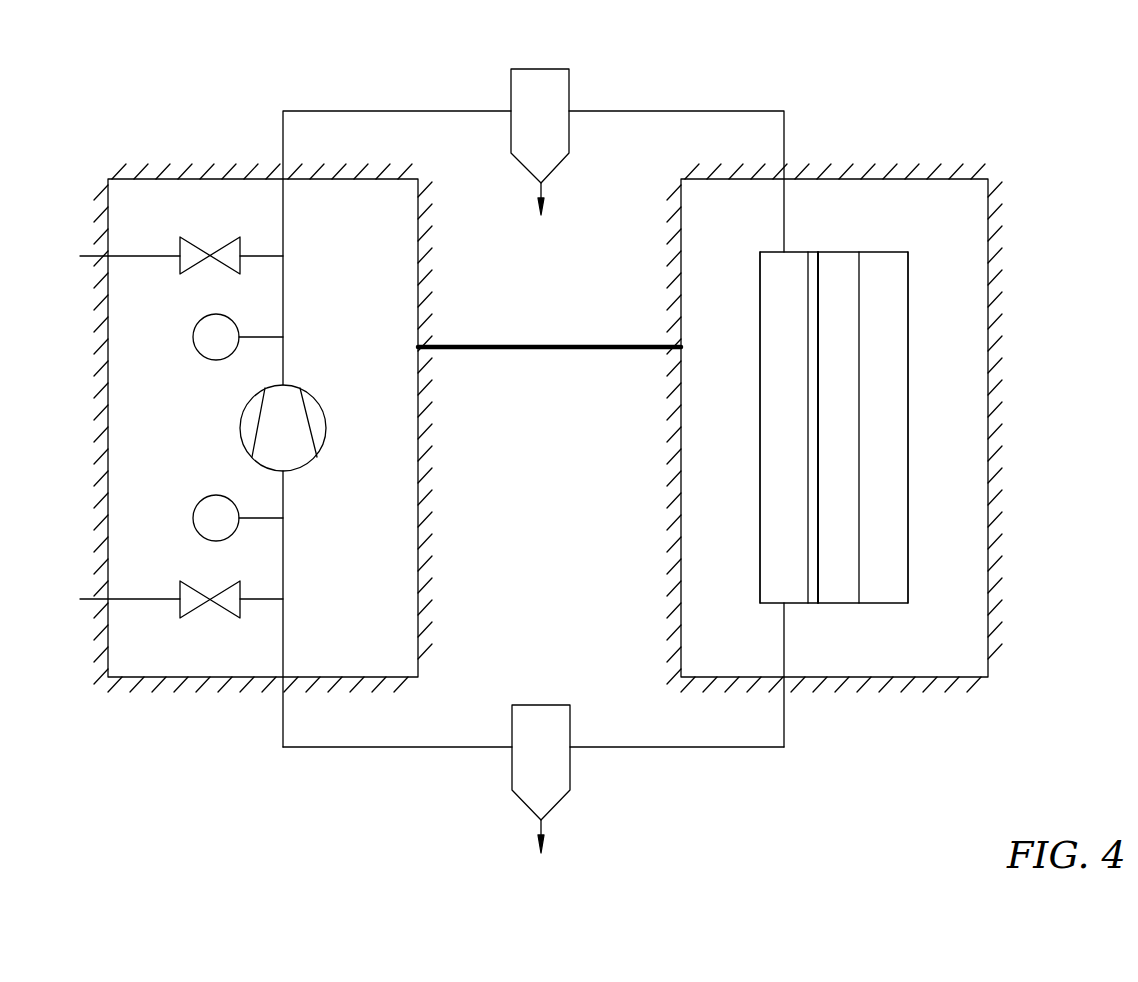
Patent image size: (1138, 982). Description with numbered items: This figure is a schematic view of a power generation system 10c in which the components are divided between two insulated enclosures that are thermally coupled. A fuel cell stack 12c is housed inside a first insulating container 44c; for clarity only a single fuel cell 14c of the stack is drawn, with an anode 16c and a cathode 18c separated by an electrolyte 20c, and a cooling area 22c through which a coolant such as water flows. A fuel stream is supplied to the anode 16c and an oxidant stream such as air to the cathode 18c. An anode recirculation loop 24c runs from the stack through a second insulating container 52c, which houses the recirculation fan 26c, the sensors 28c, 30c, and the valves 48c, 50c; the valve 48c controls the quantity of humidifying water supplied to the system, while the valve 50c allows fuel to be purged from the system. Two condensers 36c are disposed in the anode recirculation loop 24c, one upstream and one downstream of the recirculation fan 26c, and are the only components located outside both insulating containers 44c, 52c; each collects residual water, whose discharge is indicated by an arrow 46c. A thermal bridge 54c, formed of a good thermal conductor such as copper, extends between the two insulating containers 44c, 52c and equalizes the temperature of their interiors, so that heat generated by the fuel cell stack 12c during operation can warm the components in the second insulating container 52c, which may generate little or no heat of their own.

The power generation system 10c is at (1016, 92).
The fuel cell stack 12c is at (910, 266).
The fuel cell 14c is at (908, 296).
The anode 16c is at (773, 556).
The cathode 18c is at (842, 425).
The electrolyte 20c is at (818, 513).
The cooling area 22c is at (887, 322).
The anode recirculation loop 24c is at (372, 747).
The recirculation fan 26c is at (304, 462).
The sensor 28c is at (216, 495).
The sensor 30c is at (193, 337).
The condenser 36c is at (569, 88).
The insulating container 44c is at (905, 680).
The arrow 46c is at (545, 189).
The valve 48c is at (198, 250).
The valve 50c is at (196, 609).
The second insulating container 52c is at (420, 257).
The thermal bridge 54c is at (516, 345).